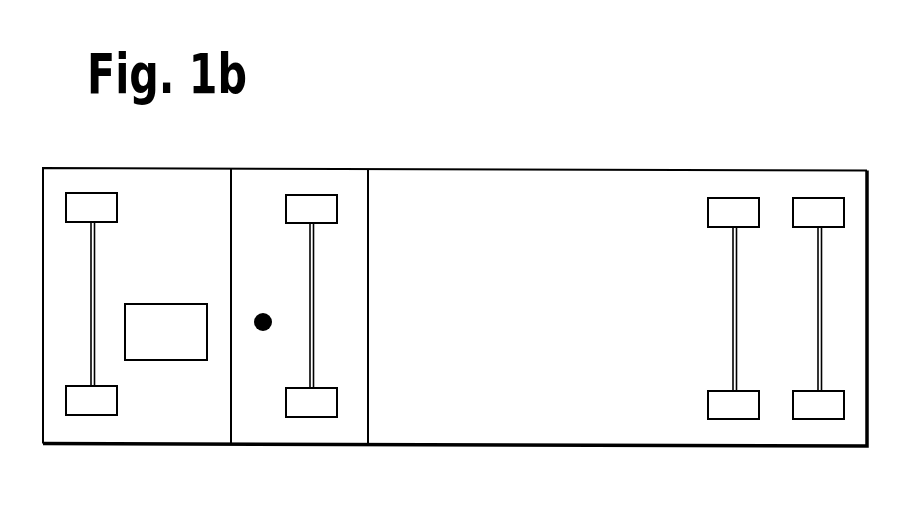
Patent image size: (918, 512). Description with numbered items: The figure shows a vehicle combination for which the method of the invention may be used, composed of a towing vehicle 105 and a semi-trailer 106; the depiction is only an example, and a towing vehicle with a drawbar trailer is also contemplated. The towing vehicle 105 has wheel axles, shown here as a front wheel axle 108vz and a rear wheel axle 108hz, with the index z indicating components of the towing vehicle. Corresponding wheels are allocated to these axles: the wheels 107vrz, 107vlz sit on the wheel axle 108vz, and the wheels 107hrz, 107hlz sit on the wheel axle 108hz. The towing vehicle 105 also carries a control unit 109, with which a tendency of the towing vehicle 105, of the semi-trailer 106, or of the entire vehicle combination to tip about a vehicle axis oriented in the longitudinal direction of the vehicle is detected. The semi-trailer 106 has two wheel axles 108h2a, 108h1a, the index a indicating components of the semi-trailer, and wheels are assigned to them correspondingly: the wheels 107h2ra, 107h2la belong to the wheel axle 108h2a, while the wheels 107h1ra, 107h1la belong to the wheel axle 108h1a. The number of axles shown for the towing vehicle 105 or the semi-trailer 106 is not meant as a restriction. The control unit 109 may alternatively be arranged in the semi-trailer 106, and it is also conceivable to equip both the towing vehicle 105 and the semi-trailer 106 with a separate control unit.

The towing vehicle 105 is at (173, 188).
The semi-trailer 106 is at (497, 192).
The wheel 107vrz is at (90, 202).
The wheel 107vlz is at (90, 408).
The wheel 107hrz is at (309, 205).
The wheel 107hlz is at (309, 409).
The wheel 107h2ra is at (737, 207).
The wheel 107h1ra is at (807, 207).
The wheel 107h2la is at (737, 413).
The wheel 107h1la is at (807, 413).
The wheel axle 108vz is at (120, 284).
The wheel axle 108hz is at (309, 290).
The wheel axle 108h2a is at (733, 293).
The wheel axle 108h1a is at (818, 293).
The control unit 109 is at (148, 353).